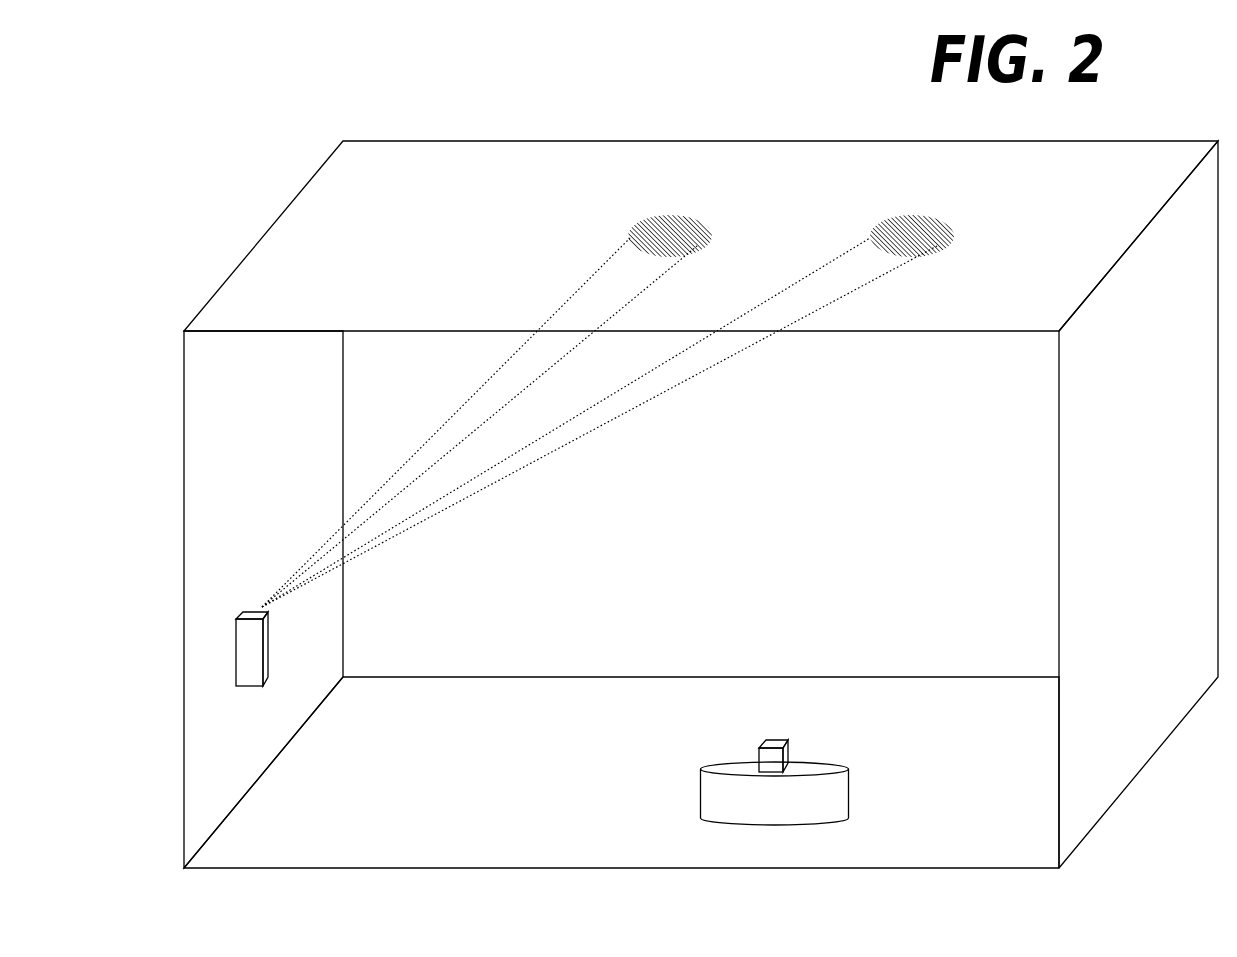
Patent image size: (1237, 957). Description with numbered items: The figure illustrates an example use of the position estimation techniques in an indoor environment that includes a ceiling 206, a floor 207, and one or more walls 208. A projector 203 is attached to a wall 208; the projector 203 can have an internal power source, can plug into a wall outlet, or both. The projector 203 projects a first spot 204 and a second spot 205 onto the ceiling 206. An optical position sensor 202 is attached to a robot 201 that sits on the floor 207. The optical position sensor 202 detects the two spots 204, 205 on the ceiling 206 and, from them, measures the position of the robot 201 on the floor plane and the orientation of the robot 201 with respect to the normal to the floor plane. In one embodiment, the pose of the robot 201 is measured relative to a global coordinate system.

The robot 201 is at (701, 770).
The optical position sensor 202 is at (785, 740).
The projector 203 is at (268, 677).
The first spot 204 is at (670, 216).
The second spot 205 is at (912, 216).
The ceiling 206 is at (336, 311).
The floor 207 is at (337, 841).
The wall 208 is at (284, 482).